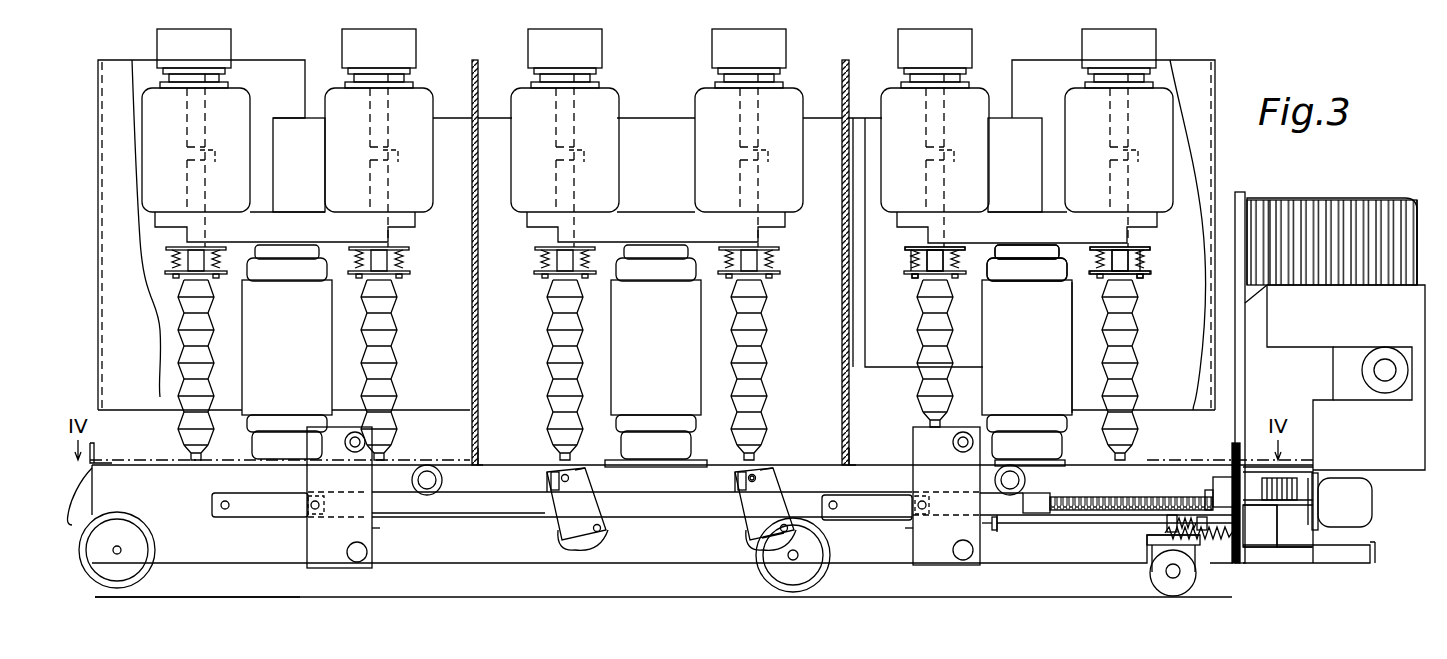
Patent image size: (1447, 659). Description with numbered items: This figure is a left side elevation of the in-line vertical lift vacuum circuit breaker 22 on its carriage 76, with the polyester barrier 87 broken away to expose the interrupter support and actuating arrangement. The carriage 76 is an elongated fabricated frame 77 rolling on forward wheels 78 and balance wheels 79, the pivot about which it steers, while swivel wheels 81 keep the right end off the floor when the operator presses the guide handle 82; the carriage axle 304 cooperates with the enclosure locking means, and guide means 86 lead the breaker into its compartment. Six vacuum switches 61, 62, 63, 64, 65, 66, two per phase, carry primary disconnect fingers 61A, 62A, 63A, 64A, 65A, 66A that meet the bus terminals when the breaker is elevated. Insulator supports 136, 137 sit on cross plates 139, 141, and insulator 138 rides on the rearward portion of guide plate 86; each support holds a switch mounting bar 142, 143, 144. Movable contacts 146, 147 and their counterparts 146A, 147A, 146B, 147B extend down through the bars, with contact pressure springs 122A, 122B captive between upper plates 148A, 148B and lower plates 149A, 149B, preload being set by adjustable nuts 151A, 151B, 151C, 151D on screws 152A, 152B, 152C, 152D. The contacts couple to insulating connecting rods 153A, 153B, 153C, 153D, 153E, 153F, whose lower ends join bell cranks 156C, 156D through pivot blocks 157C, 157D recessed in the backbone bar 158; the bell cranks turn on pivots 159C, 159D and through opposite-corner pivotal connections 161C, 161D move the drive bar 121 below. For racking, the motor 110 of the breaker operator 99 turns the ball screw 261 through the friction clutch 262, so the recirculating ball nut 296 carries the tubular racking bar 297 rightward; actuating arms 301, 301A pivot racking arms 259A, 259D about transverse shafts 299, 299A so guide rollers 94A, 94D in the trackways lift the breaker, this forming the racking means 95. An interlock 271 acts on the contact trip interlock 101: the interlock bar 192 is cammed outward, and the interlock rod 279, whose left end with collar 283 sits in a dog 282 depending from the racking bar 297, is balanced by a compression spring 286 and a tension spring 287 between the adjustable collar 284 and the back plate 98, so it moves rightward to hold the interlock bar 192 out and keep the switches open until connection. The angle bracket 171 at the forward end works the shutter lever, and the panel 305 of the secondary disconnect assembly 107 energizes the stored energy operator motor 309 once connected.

The vacuum switch circuit breaker 22 is at (466, 570).
The carriage 76 is at (680, 589).
The frame 77 is at (623, 560).
The forward wheels 78 is at (137, 568).
The balance wheels 79 is at (815, 572).
The swivel wheels 81 is at (1177, 580).
The carriage guide handle 82 is at (1410, 198).
The guide means 86 is at (152, 466).
The polyester barrier 87 is at (100, 108).
The guide roller 94A is at (352, 444).
The guide roller 94D is at (960, 444).
The circuit breaker racking means 95 is at (1075, 515).
The back plate 98 is at (1237, 192).
The breaker operator 99 is at (1299, 367).
The contact trip interlock 101 is at (1268, 535).
The secondary disconnect assembly 107 is at (1354, 173).
The motor 110 is at (1368, 510).
The switch actuating drive bar 121 is at (745, 525).
The contact pressure spring 122A is at (1140, 265).
The contact pressure spring 122B is at (955, 250).
The insulator support 136 is at (1041, 385).
The insulator support 137 is at (665, 370).
The insulator 138 is at (296, 363).
The cross plate 139 is at (1067, 465).
The cross plate 141 is at (632, 470).
The switch mounting bar 142 is at (1022, 215).
The switch mounting bar 143 is at (664, 215).
The switch mounting bar 144 is at (297, 215).
The movable contact 146 is at (1128, 172).
The movable contact 146A is at (758, 172).
The movable contact 146B is at (387, 172).
The movable contact 147 is at (943, 172).
The movable contact 147A is at (574, 172).
The movable contact 147B is at (205, 172).
The upper plate 148A is at (1140, 250).
The upper plate 148B is at (915, 250).
The lower plate 149A is at (1143, 275).
The lower plate 149B is at (913, 272).
The adjustable nut 151A is at (1140, 280).
The adjustable nut 151B is at (1070, 318).
The adjustable nut 151C is at (985, 282).
The adjustable nut 151D is at (914, 280).
The screw 152A is at (1150, 258).
The screw 152B is at (1095, 250).
The screw 152C is at (985, 262).
The screw 152D is at (908, 258).
The insulating connecting rod 153A is at (1138, 360).
The insulating connecting rod 153B is at (920, 360).
The insulating connecting rod 153C is at (767, 358).
The insulating connecting rod 153D is at (548, 355).
The insulating connecting rod 153E is at (395, 358).
The insulating connecting rod 153F is at (178, 358).
The bell crank 156C is at (778, 495).
The bell crank 156D is at (556, 492).
The pivot block 157C is at (737, 492).
The pivot block 157D is at (548, 467).
The backbone bar 158 is at (765, 472).
The pivot 159C is at (770, 467).
The pivot 159D is at (587, 470).
The pivotal connection 161C is at (760, 548).
The pivotal connection 161D is at (600, 527).
The angle bracket 171 is at (108, 463).
The interlock bar 192 is at (1273, 527).
The racking arm 259A is at (372, 527).
The racking arm 259D is at (908, 530).
The screw 261 is at (1183, 498).
The friction clutch 262 is at (1287, 490).
The interlock 271 is at (1147, 533).
The interlock rod 279 is at (1022, 523).
The dog 282 is at (997, 532).
The collar 283 is at (990, 524).
The adjustable collar 284 is at (1167, 500).
The compression spring 286 is at (1200, 530).
The tension spring 287 is at (1223, 557).
The recirculating ball nut 296 is at (1038, 497).
The tubular racking bar 297 is at (470, 515).
The transverse shaft 299 is at (357, 560).
The transverse shaft 299A is at (963, 563).
The actuating arm 301 is at (260, 515).
The actuating arm 301A is at (845, 512).
The axle 304 is at (117, 546).
The panel 305 is at (1272, 205).
The stored energy operator motor 309 is at (1385, 347).
The vacuum switch 61 is at (1095, 124).
The vacuum switch 62 is at (910, 128).
The vacuum switch 63 is at (722, 128).
The vacuum switch 64 is at (540, 128).
The vacuum switch 65 is at (355, 123).
The vacuum switch 66 is at (172, 131).
The primary disconnect finger 61A is at (1110, 33).
The primary disconnect finger 62A is at (925, 33).
The primary disconnect finger 63A is at (736, 33).
The primary disconnect finger 64A is at (552, 33).
The primary disconnect finger 65A is at (368, 33).
The primary disconnect finger 66A is at (183, 33).